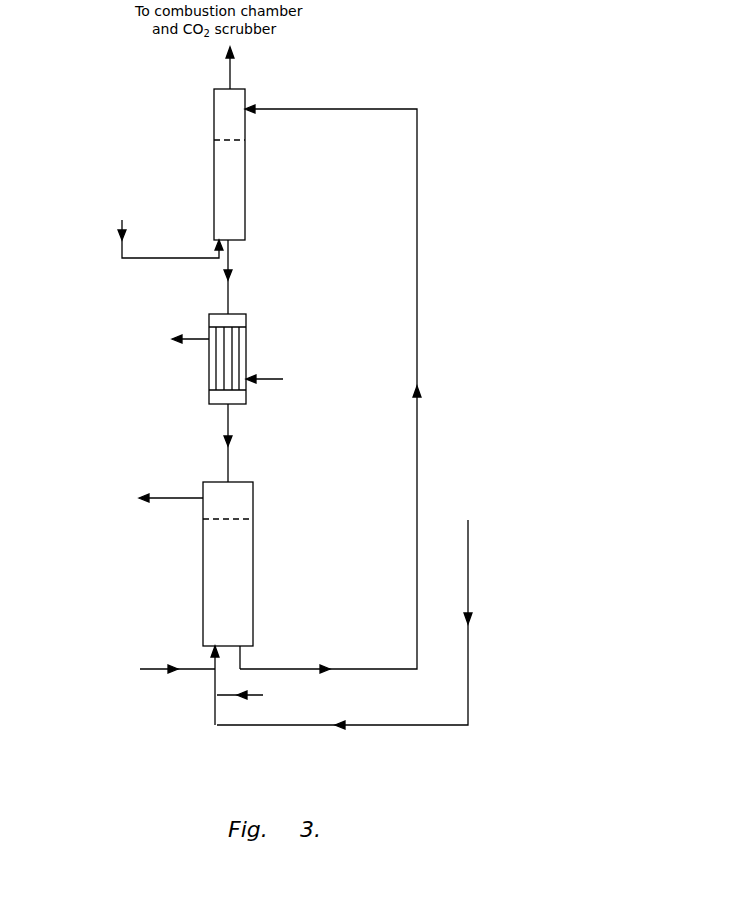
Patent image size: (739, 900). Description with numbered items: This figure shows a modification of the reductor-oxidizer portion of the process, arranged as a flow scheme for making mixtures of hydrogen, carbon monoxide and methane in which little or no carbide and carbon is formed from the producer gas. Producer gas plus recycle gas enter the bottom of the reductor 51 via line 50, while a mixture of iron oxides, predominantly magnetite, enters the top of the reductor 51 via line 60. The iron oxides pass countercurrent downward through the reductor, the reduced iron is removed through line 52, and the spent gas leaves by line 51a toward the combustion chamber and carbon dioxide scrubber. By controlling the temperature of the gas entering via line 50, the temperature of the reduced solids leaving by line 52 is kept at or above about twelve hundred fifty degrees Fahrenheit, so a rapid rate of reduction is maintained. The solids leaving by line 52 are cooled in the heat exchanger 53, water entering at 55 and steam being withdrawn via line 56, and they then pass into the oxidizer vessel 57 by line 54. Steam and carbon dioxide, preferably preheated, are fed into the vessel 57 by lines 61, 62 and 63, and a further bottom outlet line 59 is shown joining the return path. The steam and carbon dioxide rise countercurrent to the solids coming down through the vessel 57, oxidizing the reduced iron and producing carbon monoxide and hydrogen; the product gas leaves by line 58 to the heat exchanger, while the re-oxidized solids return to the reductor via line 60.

The line 50 is at (186, 259).
The reductor 51 is at (245, 197).
The line 51a is at (229, 68).
The line 52 is at (228, 291).
The heat exchanger 53 is at (246, 331).
The line 54 is at (229, 440).
The water inlet 55 is at (281, 381).
The line 56 is at (197, 341).
The oxidizer vessel 57 is at (203, 578).
The line 58 is at (185, 498).
The oxidizer bottom outlet line 59 is at (216, 660).
The line 60 is at (348, 668).
The line 61 is at (468, 613).
The line 62 is at (230, 697).
The line 63 is at (193, 671).